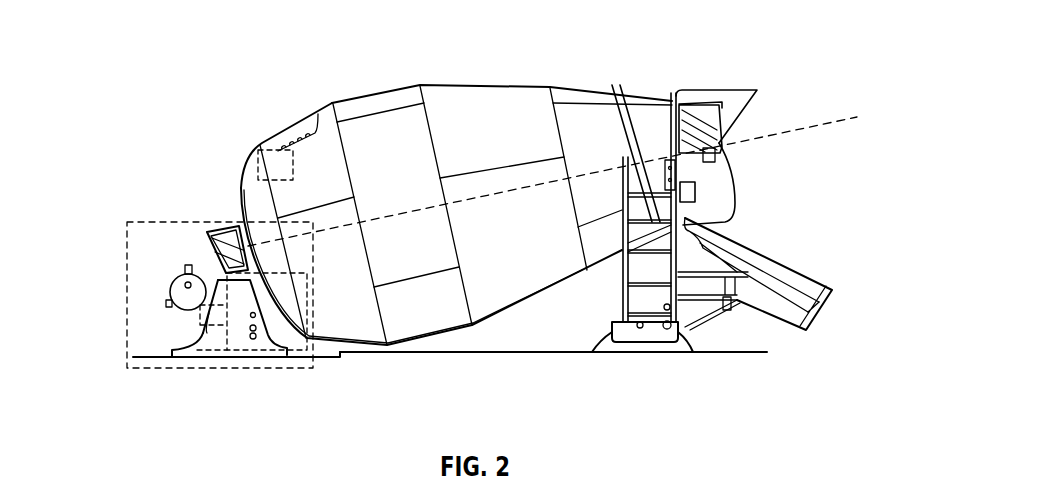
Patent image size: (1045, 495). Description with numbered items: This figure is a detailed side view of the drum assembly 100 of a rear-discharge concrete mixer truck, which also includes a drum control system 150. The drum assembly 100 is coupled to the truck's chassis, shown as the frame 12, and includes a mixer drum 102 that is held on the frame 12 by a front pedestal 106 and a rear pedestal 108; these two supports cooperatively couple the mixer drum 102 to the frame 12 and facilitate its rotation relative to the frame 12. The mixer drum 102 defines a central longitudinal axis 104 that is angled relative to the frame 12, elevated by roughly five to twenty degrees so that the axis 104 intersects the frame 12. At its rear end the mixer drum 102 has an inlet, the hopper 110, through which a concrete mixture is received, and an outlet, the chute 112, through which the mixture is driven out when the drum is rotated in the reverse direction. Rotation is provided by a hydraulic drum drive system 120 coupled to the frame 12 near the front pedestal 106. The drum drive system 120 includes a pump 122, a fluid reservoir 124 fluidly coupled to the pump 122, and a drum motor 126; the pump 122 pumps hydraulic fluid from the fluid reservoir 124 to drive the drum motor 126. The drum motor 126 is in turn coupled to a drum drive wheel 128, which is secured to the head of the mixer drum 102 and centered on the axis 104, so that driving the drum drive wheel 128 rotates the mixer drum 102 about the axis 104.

The drum assembly 100 is at (266, 58).
The frame 12 is at (490, 352).
The mixer drum 102 is at (503, 97).
The axis 104 is at (806, 128).
The front pedestal 106 is at (205, 336).
The rear pedestal 108 is at (653, 335).
The hopper 110 is at (722, 88).
The chute 112 is at (810, 273).
The drum drive system 120 is at (146, 221).
The pump 122 is at (202, 312).
The fluid reservoir 124 is at (181, 298).
The drum motor 126 is at (298, 357).
The drum drive wheel 128 is at (207, 256).
The drum control system 150 is at (247, 298).